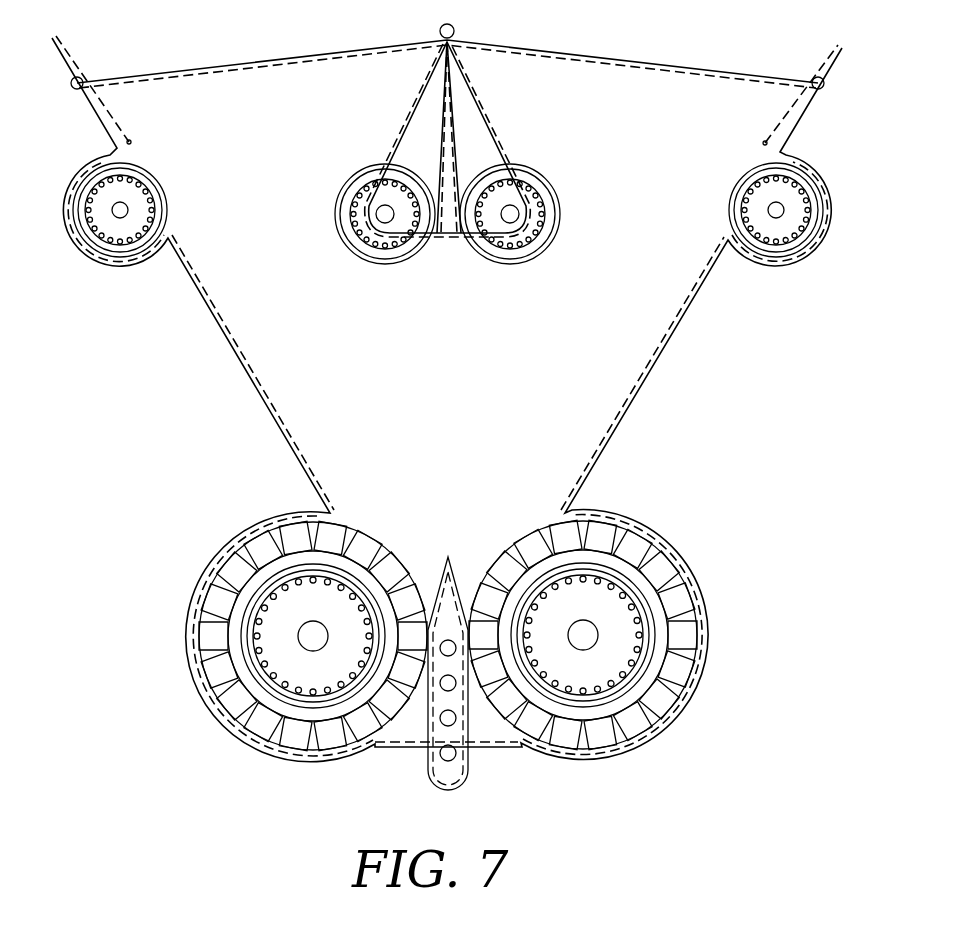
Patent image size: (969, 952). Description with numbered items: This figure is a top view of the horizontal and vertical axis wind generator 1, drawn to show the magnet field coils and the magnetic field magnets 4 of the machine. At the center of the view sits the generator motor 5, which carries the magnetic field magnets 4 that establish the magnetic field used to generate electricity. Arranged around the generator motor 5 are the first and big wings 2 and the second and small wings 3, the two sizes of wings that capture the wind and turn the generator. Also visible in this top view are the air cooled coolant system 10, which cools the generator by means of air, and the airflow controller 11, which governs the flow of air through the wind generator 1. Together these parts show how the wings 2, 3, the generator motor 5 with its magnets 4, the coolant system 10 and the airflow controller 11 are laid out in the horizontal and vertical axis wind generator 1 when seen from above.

The horizontal and vertical axis wind generator 1 is at (392, 365).
The first and big wings 2 is at (660, 547).
The second and small wings 3 is at (340, 212).
The magnetic field magnets 4 is at (685, 673).
The generator motor 5 is at (784, 210).
The air cooled coolant system 10 is at (432, 784).
The airflow controller 11 is at (70, 83).